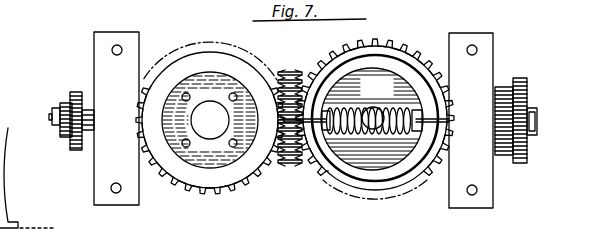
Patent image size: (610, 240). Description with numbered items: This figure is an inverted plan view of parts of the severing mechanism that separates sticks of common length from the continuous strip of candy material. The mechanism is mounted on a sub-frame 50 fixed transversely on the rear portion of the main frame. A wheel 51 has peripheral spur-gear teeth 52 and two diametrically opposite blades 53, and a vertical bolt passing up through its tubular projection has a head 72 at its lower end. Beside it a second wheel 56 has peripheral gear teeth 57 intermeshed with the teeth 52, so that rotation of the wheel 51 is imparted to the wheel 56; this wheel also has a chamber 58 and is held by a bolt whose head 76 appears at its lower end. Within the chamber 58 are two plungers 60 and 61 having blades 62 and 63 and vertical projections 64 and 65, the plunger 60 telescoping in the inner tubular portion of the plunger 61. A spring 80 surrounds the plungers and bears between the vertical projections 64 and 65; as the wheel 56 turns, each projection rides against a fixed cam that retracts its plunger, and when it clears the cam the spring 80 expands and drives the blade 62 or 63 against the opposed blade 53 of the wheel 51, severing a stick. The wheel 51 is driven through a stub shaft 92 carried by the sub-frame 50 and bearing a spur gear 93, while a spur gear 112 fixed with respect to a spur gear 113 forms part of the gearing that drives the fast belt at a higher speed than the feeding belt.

The sub-frame 50 is at (294, 69).
The wheel 51 is at (181, 62).
The peripheral spur-gear teeth 52 is at (215, 195).
The blades 53 is at (266, 150).
The wheel 56 is at (372, 58).
The peripheral gear teeth 57 is at (419, 57).
The chamber 58 is at (369, 107).
The plunger 60 is at (334, 132).
The plunger 61 is at (421, 127).
The blade 62 is at (298, 160).
The blade 63 is at (428, 165).
The vertical projection 64 is at (337, 93).
The vertical projection 65 is at (412, 140).
The head 72 is at (210, 120).
The head 76 is at (372, 135).
The spring 80 is at (407, 40).
The stub shaft 92 is at (55, 118).
The spur gear 93 is at (72, 146).
The spur gear 112 is at (508, 178).
The spur gear 113 is at (528, 88).